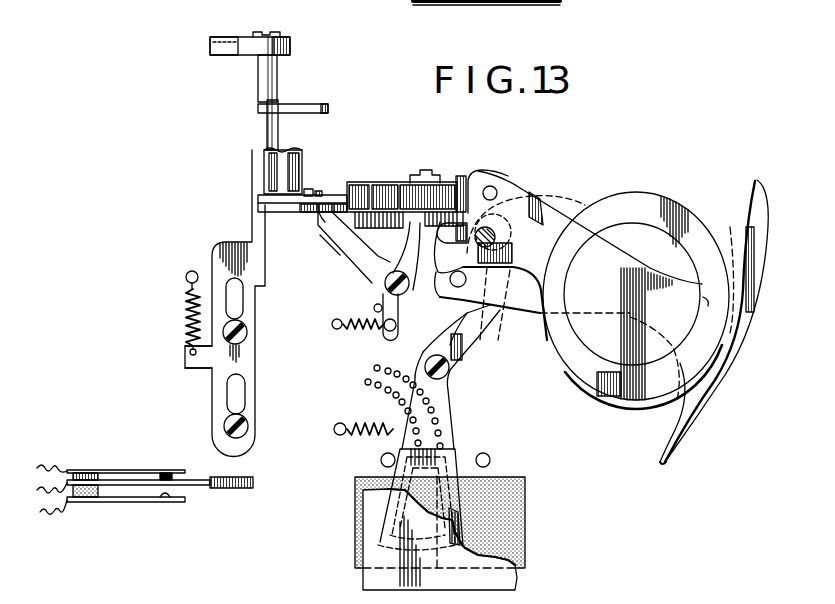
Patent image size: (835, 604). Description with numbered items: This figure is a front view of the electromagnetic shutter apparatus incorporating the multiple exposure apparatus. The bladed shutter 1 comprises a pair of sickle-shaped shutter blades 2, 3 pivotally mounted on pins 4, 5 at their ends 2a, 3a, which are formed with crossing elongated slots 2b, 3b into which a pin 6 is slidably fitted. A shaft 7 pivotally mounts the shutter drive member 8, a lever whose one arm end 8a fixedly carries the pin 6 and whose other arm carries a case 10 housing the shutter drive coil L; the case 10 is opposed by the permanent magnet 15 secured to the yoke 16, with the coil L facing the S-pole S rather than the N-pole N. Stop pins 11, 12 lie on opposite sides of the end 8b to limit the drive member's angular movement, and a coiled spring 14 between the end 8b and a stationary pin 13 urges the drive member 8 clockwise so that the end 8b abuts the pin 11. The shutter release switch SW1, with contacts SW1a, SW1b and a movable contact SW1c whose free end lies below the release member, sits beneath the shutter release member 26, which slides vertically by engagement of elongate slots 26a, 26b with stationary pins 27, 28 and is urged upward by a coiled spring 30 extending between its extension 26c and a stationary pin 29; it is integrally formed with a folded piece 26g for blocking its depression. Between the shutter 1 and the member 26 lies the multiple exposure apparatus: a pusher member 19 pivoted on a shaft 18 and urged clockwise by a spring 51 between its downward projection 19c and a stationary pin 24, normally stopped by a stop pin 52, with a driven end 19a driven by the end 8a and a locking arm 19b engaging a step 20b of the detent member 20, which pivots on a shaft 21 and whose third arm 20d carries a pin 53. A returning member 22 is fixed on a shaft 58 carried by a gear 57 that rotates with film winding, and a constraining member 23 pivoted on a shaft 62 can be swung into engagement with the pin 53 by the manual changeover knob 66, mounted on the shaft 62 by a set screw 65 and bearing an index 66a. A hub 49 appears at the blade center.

The bladed shutter 1 is at (625, 183).
The shutter blade 2 is at (558, 350).
The end of shutter blade 2a is at (486, 172).
The elongated slot 2b is at (497, 283).
The shutter blade 3 is at (690, 215).
The end of shutter blade 3a is at (445, 292).
The elongated slot 3b is at (520, 190).
The pin 4 is at (456, 305).
The pin 5 is at (497, 190).
The pin 6 is at (512, 234).
The shaft 7 is at (448, 386).
The shutter drive member 8 is at (458, 360).
The end of drive member arm 8a is at (453, 244).
The end of drive member 8b is at (450, 438).
The case 10 is at (395, 473).
The stop pin 11 is at (381, 460).
The stop pin 12 is at (490, 460).
The stationary pin 13 is at (338, 424).
The coiled spring 14 is at (372, 430).
The permanent magnet 15 is at (525, 524).
The yoke 16 is at (512, 5).
The shaft 18 is at (385, 280).
The pusher member 19 is at (351, 256).
The driven end 19a is at (412, 180).
The locking arm 19b is at (317, 213).
The downward projection 19c is at (397, 326).
The detent member 20 is at (347, 190).
The step 20b is at (316, 249).
The third arm 20d is at (262, 208).
The shaft 21 is at (311, 189).
The returning member 22 is at (460, 177).
The constraining member 23 is at (300, 105).
The stationary pin 24 is at (333, 324).
The shutter release member 26 is at (215, 258).
The elongate slot 26a is at (240, 306).
The elongate slot 26b is at (242, 394).
The extension 26c is at (198, 368).
The folded piece 26g is at (285, 153).
The stationary pin 27 is at (248, 333).
The stationary pin 28 is at (250, 428).
The stationary pin 29 is at (186, 277).
The coiled spring 30 is at (186, 315).
The hub 49 is at (708, 306).
The spring 51 is at (370, 333).
The stop pin 52 is at (374, 308).
The pin 53 is at (270, 128).
The gear 57 is at (378, 186).
The shaft 58 is at (435, 170).
The shaft 62 is at (258, 75).
The set screw 65 is at (262, 32).
The manual changeover knob 66 is at (291, 47).
The index 66a is at (222, 37).
The shutter release switch SW1 is at (122, 505).
The contact of shutter release switch SW1a is at (145, 502).
The contact of shutter release switch SW1b is at (130, 463).
The movable contact SW1c is at (193, 487).
The S-pole S is at (372, 525).
The N-pole N is at (501, 524).
The shutter drive coil L is at (460, 516).